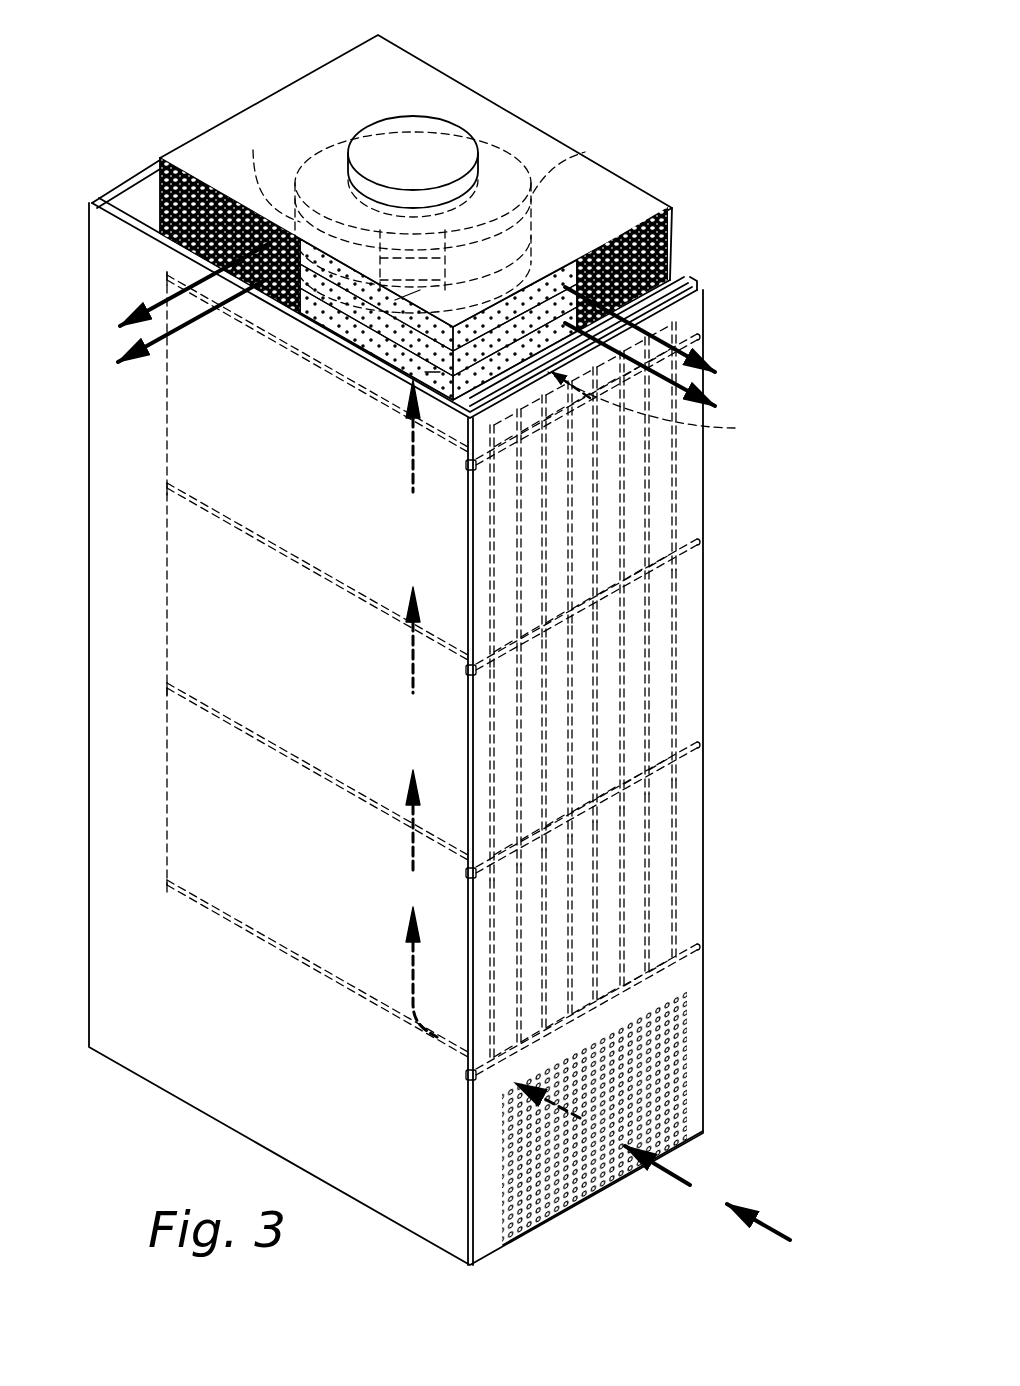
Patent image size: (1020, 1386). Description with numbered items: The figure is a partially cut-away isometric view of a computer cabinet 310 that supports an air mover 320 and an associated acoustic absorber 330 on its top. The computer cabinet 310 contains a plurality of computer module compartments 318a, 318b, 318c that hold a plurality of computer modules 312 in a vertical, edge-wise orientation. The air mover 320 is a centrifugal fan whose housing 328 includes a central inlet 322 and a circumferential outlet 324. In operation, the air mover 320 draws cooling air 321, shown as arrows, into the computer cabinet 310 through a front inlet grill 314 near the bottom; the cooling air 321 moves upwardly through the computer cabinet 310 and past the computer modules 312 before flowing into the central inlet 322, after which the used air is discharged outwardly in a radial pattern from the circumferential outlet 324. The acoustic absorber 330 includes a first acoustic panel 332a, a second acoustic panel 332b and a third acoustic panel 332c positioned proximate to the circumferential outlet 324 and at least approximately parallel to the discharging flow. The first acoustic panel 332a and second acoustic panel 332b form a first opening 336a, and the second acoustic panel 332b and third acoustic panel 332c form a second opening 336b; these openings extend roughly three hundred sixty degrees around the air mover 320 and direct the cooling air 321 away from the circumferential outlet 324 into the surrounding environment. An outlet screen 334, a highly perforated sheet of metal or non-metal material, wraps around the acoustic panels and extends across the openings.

The computer cabinet 310 is at (690, 605).
The computer modules 312 is at (600, 870).
The front inlet grill 314 is at (678, 1112).
The computer module compartment 318a is at (645, 930).
The computer module compartment 318b is at (648, 728).
The computer module compartment 318c is at (644, 510).
The air mover 320 is at (377, 148).
The cooling air 321 is at (197, 313).
The central inlet 322 is at (661, 408).
The circumferential outlet 324 is at (253, 150).
The housing 328 is at (585, 152).
The acoustic absorber 330 is at (556, 118).
The first acoustic panel 332a is at (313, 356).
The second acoustic panel 332b is at (323, 378).
The third acoustic panel 332c is at (392, 375).
The outlet screen 334 is at (160, 193).
The first opening 336a is at (388, 300).
The second opening 336b is at (431, 378).